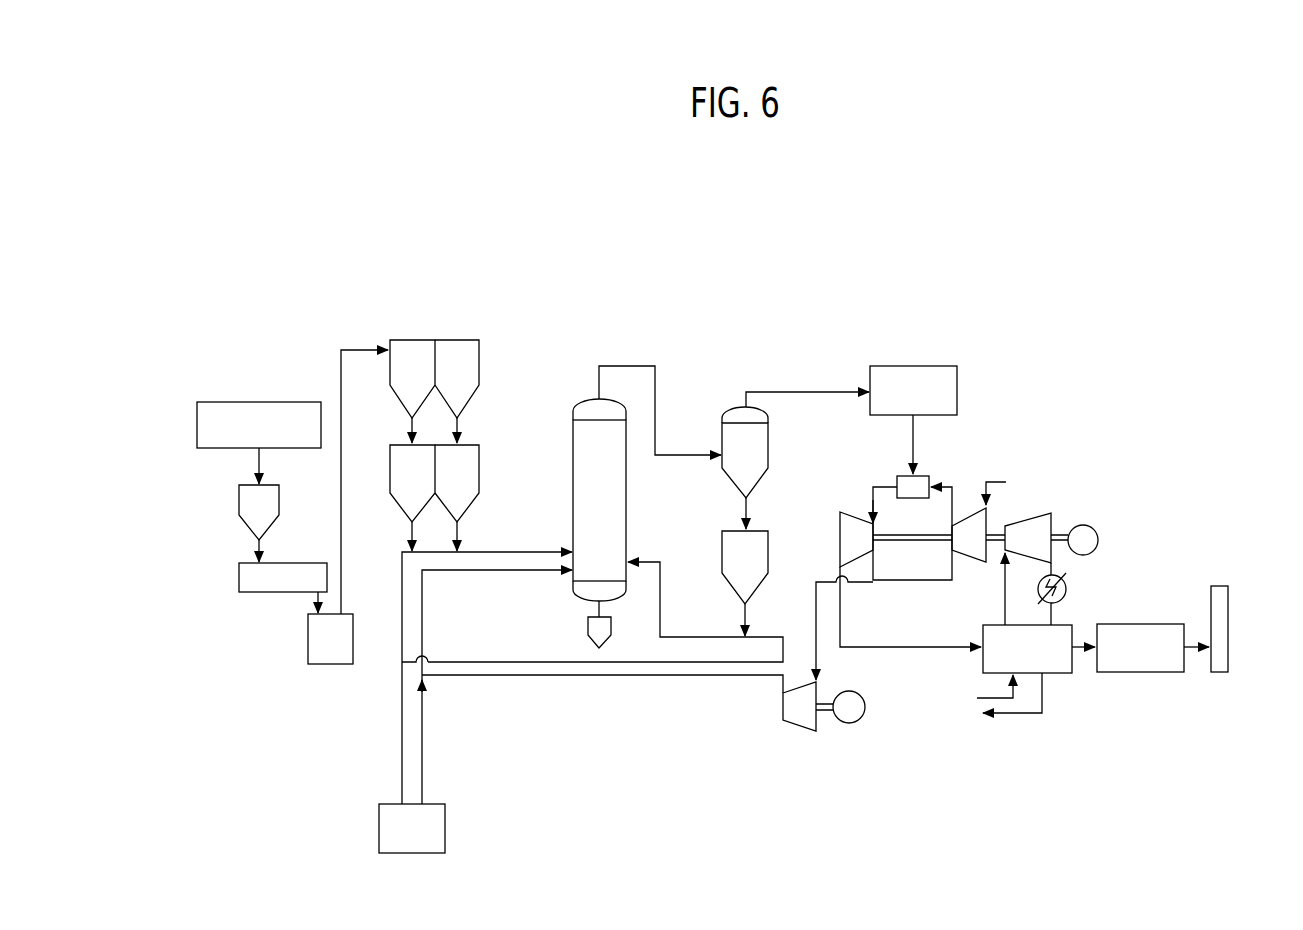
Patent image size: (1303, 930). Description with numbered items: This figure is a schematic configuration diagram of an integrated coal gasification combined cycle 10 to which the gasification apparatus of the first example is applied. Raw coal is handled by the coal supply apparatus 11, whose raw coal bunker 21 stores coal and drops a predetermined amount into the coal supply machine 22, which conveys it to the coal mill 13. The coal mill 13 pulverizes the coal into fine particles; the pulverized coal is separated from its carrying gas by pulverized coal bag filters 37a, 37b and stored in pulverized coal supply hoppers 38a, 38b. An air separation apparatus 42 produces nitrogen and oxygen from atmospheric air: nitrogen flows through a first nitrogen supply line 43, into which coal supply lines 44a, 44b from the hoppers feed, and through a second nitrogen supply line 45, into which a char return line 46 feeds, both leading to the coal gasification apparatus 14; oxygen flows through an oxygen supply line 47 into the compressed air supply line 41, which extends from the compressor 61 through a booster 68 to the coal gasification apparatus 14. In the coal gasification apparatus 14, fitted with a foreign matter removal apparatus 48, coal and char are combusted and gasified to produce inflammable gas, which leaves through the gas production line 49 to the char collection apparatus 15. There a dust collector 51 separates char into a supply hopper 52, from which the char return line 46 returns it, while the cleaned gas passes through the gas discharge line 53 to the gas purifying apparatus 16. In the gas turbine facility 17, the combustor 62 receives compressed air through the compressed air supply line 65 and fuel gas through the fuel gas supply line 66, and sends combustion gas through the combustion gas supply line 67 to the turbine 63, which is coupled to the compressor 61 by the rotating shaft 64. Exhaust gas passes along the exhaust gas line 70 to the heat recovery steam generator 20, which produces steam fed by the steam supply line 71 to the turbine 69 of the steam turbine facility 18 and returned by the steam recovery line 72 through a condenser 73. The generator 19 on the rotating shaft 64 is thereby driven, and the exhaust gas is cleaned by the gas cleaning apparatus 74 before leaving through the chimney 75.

The integrated coal gasification combined cycle 10 is at (500, 287).
The coal supply apparatus 11 is at (262, 376).
The coal mill 13 is at (308, 677).
The coal gasification apparatus 14 is at (583, 379).
The char collection apparatus 15 is at (763, 488).
The gas purifying apparatus 16 is at (932, 364).
The gas turbine facility 17 is at (898, 492).
The steam turbine facility 18 is at (1042, 501).
The generator 19 is at (1101, 529).
The heat recovery steam generator 20 is at (1056, 679).
The raw coal bunker 21 is at (238, 506).
The coal supply machine 22 is at (238, 574).
The pulverized coal bag filter 37a is at (407, 339).
The pulverized coal bag filter 37b is at (457, 339).
The pulverized coal supply hopper 38a is at (390, 458).
The pulverized coal supply hopper 38b is at (479, 458).
The compressed air supply line 41 is at (620, 677).
The air separation apparatus 42 is at (378, 820).
The first nitrogen supply line 43 is at (401, 713).
The coal supply line 44a is at (411, 530).
The coal supply line 44b is at (459, 530).
The second nitrogen supply line 45 is at (457, 661).
The char return line 46 is at (747, 617).
The oxygen supply line 47 is at (423, 712).
The foreign matter removal apparatus 48 is at (587, 629).
The gas production line 49 is at (656, 416).
The dust collector 51 is at (769, 452).
The supply hopper 52 is at (769, 556).
The gas discharge line 53 is at (798, 392).
The compressor 61 is at (952, 582).
The combustor 62 is at (926, 477).
The turbine 63 is at (839, 522).
The rotating shaft 64 is at (913, 542).
The compressed air supply line 65 is at (954, 504).
The fuel gas supply line 66 is at (914, 431).
The combustion gas supply line 67 is at (880, 486).
The booster 68 is at (792, 731).
The turbine 69 is at (1040, 520).
The exhaust gas line 70 is at (912, 650).
The steam supply line 71 is at (1003, 613).
The steam recovery line 72 is at (1054, 612).
The condenser 73 is at (1063, 581).
The gas cleaning apparatus 74 is at (1151, 624).
The chimney 75 is at (1219, 586).